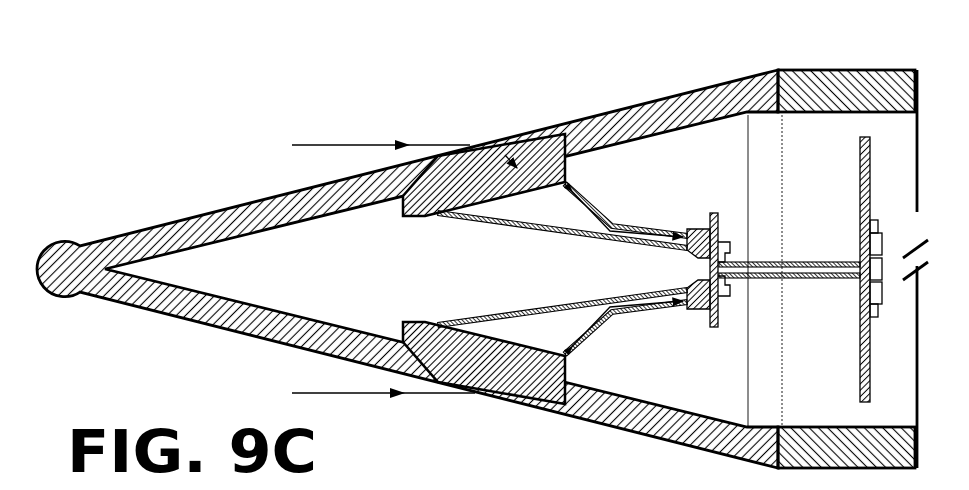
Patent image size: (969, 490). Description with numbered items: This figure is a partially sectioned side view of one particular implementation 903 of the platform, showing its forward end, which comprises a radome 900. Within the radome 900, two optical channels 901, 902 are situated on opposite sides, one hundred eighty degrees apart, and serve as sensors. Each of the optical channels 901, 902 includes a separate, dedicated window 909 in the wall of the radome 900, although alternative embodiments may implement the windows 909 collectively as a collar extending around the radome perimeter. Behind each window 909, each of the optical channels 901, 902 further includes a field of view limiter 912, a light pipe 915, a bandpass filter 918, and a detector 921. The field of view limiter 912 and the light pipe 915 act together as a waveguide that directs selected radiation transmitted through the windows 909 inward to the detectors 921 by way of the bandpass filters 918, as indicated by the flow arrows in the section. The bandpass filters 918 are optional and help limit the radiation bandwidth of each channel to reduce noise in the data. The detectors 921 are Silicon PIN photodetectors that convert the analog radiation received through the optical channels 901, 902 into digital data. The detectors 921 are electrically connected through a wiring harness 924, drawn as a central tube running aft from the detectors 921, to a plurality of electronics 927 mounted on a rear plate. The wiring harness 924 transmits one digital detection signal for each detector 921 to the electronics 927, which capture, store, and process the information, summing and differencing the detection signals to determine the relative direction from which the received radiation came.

The radome 900 is at (195, 216).
The optical channel 901 is at (454, 412).
The optical channel 902 is at (446, 131).
The platform implementation 903 is at (762, 28).
The window 909 is at (507, 133).
The field of view limiter 912 is at (569, 186).
The light pipe 915 is at (625, 219).
The bandpass filter 918 is at (689, 229).
The detector 921 is at (724, 238).
The wiring harness 924 is at (790, 262).
The electronics 927 is at (889, 223).